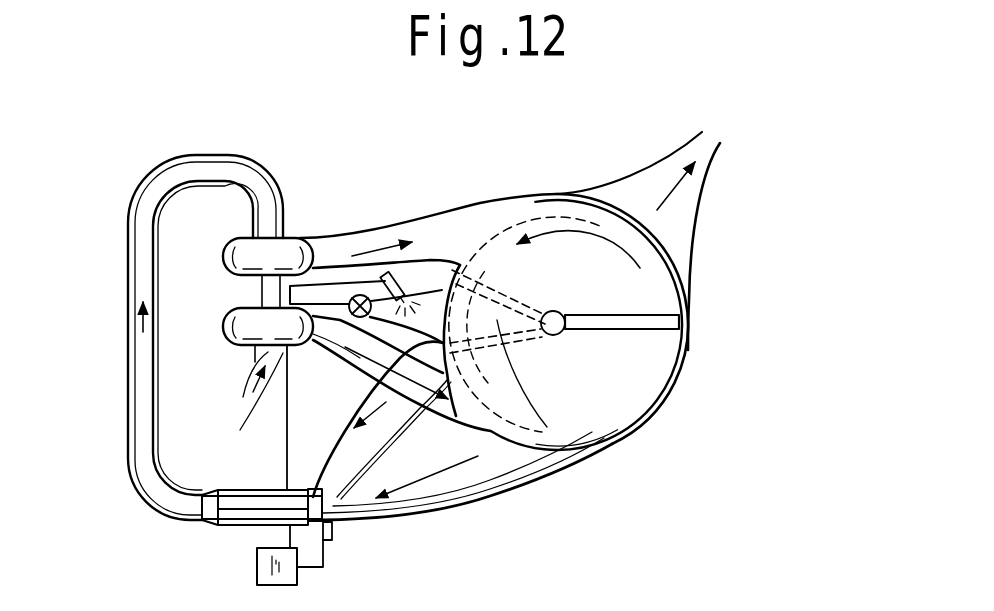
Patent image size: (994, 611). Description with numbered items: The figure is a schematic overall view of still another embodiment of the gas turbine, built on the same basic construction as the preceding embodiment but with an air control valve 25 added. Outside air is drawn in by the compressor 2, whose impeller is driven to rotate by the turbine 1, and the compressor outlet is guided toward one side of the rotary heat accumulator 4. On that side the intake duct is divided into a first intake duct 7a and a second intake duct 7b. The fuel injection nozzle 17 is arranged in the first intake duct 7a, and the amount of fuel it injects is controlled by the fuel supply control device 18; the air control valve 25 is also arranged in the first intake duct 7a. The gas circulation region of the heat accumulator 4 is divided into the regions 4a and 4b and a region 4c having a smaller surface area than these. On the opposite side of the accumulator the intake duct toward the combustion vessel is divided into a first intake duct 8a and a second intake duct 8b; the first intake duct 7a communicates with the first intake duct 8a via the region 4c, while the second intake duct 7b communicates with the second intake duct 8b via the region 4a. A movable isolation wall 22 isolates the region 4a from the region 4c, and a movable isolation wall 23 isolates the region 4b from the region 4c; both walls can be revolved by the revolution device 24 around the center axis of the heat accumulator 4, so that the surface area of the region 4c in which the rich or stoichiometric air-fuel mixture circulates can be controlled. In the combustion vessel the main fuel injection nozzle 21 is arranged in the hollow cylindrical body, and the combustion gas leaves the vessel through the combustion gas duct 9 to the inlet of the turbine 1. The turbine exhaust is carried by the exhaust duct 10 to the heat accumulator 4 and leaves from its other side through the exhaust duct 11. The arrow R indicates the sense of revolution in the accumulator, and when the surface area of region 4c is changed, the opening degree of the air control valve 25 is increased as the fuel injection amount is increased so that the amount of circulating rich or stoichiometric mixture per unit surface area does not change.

The turbine 1 is at (228, 246).
The compressor 2 is at (228, 321).
The rotary heat accumulator 4 is at (679, 389).
The region 4a is at (632, 402).
The region 4b is at (662, 302).
The region 4c is at (582, 448).
The first intake duct 7a is at (450, 262).
The second intake duct 7b is at (352, 372).
The first intake duct 8a is at (344, 443).
The second intake duct 8b is at (490, 506).
The combustion gas duct 9 is at (130, 390).
The exhaust duct 10 is at (335, 252).
The exhaust duct 11 is at (712, 148).
The fuel injection nozzle 17 is at (386, 273).
The fuel supply control device 18 is at (257, 568).
The main fuel injection nozzle 21 is at (332, 528).
The movable isolation wall 22 is at (528, 340).
The movable isolation wall 23 is at (520, 305).
The revolution device 24 is at (562, 316).
The air control valve 25 is at (322, 264).
The swirl flow direction R is at (545, 233).